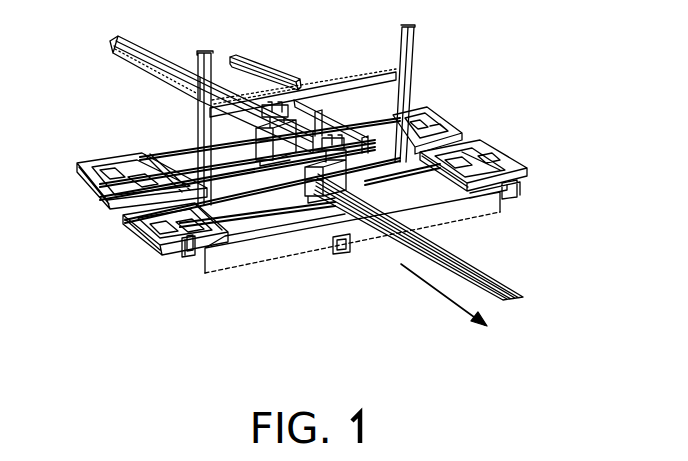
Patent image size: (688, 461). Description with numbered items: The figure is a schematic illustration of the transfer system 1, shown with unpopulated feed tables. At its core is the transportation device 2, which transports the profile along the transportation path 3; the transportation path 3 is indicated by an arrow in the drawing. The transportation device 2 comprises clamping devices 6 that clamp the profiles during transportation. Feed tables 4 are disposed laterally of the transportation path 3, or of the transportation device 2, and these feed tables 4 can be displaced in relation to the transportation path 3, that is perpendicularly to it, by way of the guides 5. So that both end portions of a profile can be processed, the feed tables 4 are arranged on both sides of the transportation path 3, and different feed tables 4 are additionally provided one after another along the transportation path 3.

The transfer system 1 is at (619, 42).
The transportation device 2 is at (458, 253).
The transportation path 3 is at (430, 286).
The feed table 4 is at (36, 204).
The guide 5 is at (255, 230).
The clamping device 6 is at (252, 146).